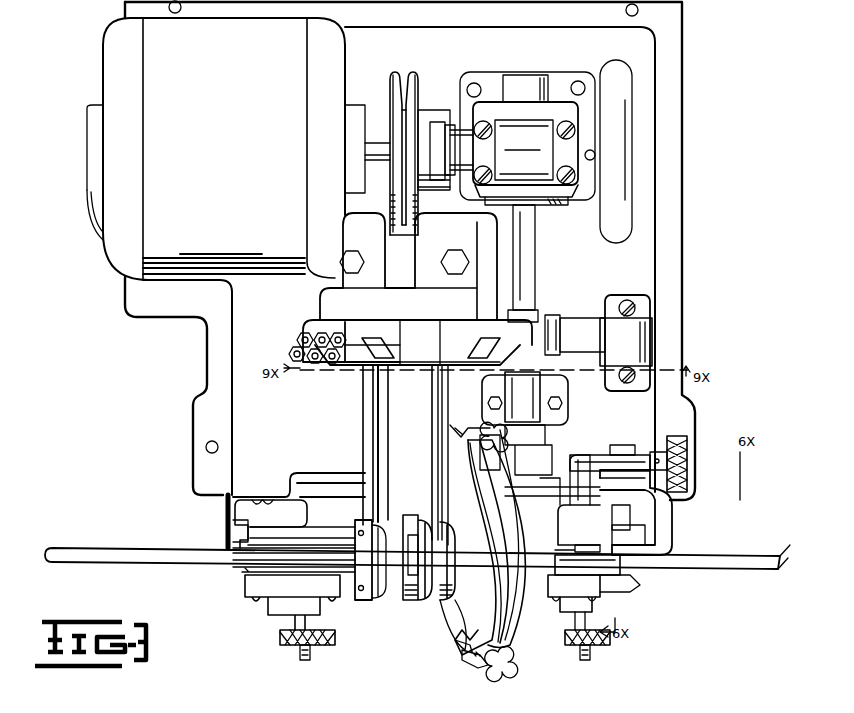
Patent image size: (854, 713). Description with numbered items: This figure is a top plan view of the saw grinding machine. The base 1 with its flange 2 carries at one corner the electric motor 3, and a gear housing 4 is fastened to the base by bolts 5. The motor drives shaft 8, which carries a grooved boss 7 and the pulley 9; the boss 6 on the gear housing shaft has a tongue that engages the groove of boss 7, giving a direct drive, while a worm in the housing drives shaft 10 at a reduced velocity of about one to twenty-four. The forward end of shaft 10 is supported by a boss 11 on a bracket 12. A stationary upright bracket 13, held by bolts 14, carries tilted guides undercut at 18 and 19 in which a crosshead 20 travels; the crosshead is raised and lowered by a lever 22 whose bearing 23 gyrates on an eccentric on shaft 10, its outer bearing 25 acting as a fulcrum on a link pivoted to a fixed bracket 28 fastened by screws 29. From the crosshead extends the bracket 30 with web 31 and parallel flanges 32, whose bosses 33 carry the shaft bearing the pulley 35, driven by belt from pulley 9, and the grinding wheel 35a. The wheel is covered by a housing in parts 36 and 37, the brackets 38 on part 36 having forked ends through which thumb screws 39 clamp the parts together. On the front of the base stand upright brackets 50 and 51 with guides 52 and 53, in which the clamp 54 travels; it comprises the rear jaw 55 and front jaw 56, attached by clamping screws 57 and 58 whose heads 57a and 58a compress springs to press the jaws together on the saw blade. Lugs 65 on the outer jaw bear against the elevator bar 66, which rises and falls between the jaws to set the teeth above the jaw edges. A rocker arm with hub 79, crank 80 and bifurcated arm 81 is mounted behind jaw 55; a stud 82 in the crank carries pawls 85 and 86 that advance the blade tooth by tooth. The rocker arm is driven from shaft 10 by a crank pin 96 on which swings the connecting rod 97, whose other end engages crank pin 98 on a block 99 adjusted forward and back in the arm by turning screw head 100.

The base 1 is at (640, 192).
The flange 2 is at (673, 131).
The electric motor 3 is at (153, 90).
The gear housing 4 is at (530, 130).
The bolts 5 is at (475, 83).
The boss 6 is at (462, 178).
The boss 7 is at (422, 172).
The shaft 8 is at (376, 150).
The pulley 9 is at (401, 85).
The shaft 10 is at (525, 245).
The boss 11 is at (568, 395).
The bracket 12 is at (566, 415).
The stationary upright bracket 13 is at (335, 300).
The bolts 14 is at (353, 252).
The undercut 18 is at (492, 362).
The undercut 19 is at (383, 338).
The crosshead 20 is at (375, 385).
The lever 22 is at (572, 335).
The bearing 23 is at (548, 330).
The bearing 25 is at (630, 340).
The fixed bracket 28 is at (640, 305).
The bolts or screws 29 is at (628, 302).
The bracket 30 is at (372, 428).
The web 31 is at (385, 440).
The flanges 32 is at (432, 480).
The bosses 33 is at (378, 600).
The pulley 35 is at (415, 600).
The grinding wheel 35a is at (458, 632).
The housing part 36 is at (478, 652).
The housing part 37 is at (522, 635).
The brackets 38 is at (490, 432).
The thumb screws 39 is at (506, 443).
The upright bracket 50 is at (674, 517).
The upright bracket 51 is at (225, 508).
The guide 52 is at (662, 540).
The guide 53 is at (233, 531).
The clamp 54 is at (255, 556).
The rear jaw 55 is at (290, 540).
The front jaw 56 is at (262, 583).
The clamping screw 57 is at (302, 660).
The screw head 57a is at (285, 640).
The clamping screw 58 is at (583, 660).
The screw head 58a is at (602, 645).
The lugs 65 is at (245, 572).
The elevator bar 66 is at (750, 568).
The hub 79 is at (585, 480).
The crank 80 is at (572, 533).
The bifurcated arm 81 is at (605, 465).
The stud 82 is at (618, 598).
The pawl 85 is at (587, 565).
The pawl 86 is at (592, 553).
The crank pin 96 is at (523, 508).
The connecting rod 97 is at (494, 542).
The crank pin 98 is at (621, 517).
The block 99 is at (620, 452).
The screw head 100 is at (687, 478).